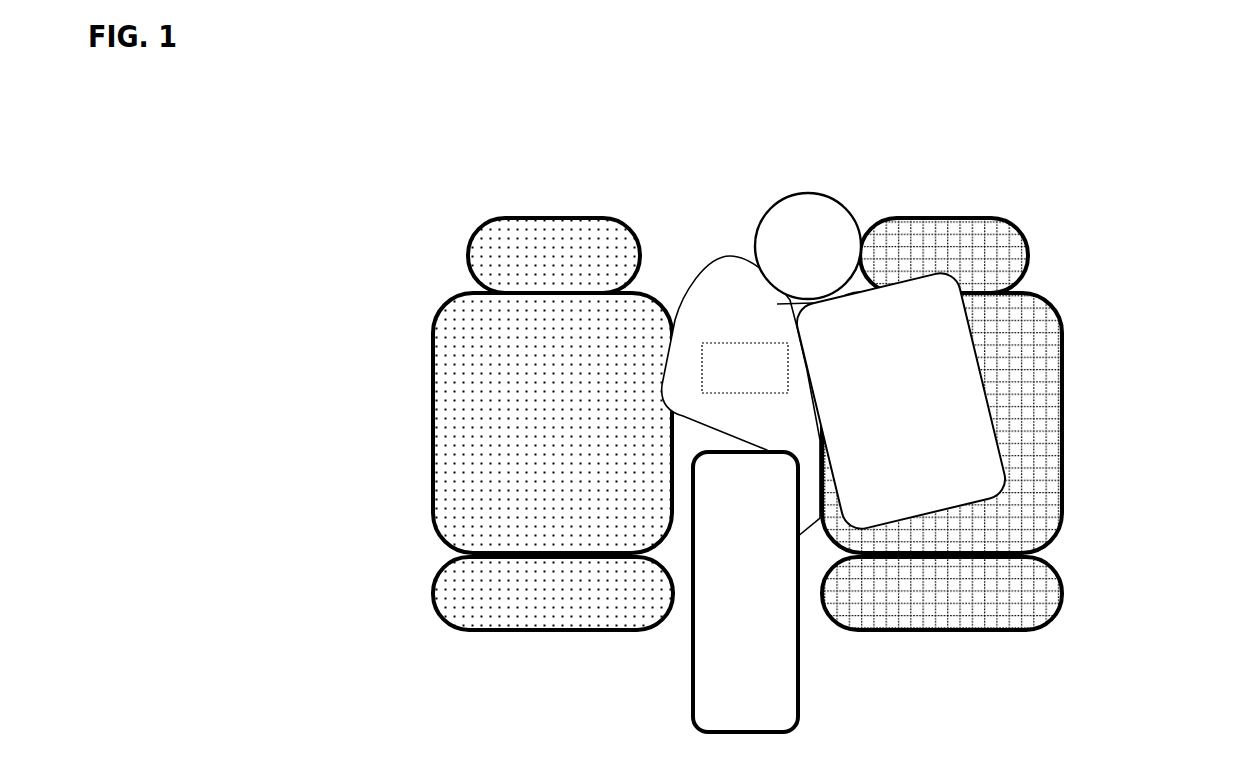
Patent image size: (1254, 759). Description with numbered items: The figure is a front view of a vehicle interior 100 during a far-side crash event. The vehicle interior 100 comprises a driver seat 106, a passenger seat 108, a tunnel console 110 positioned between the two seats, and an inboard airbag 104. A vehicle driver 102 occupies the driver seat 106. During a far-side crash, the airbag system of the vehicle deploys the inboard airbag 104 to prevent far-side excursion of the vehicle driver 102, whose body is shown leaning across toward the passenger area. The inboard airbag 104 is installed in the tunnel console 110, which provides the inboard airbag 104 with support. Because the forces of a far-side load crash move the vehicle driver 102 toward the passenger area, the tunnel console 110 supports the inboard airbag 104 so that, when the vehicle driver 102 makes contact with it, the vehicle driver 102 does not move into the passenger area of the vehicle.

The vehicle interior 100 is at (1129, 119).
The vehicle driver 102 is at (813, 207).
The inboard airbag 104 is at (769, 383).
The driver seat 106 is at (1062, 372).
The passenger seat 108 is at (435, 373).
The tunnel console 110 is at (772, 594).